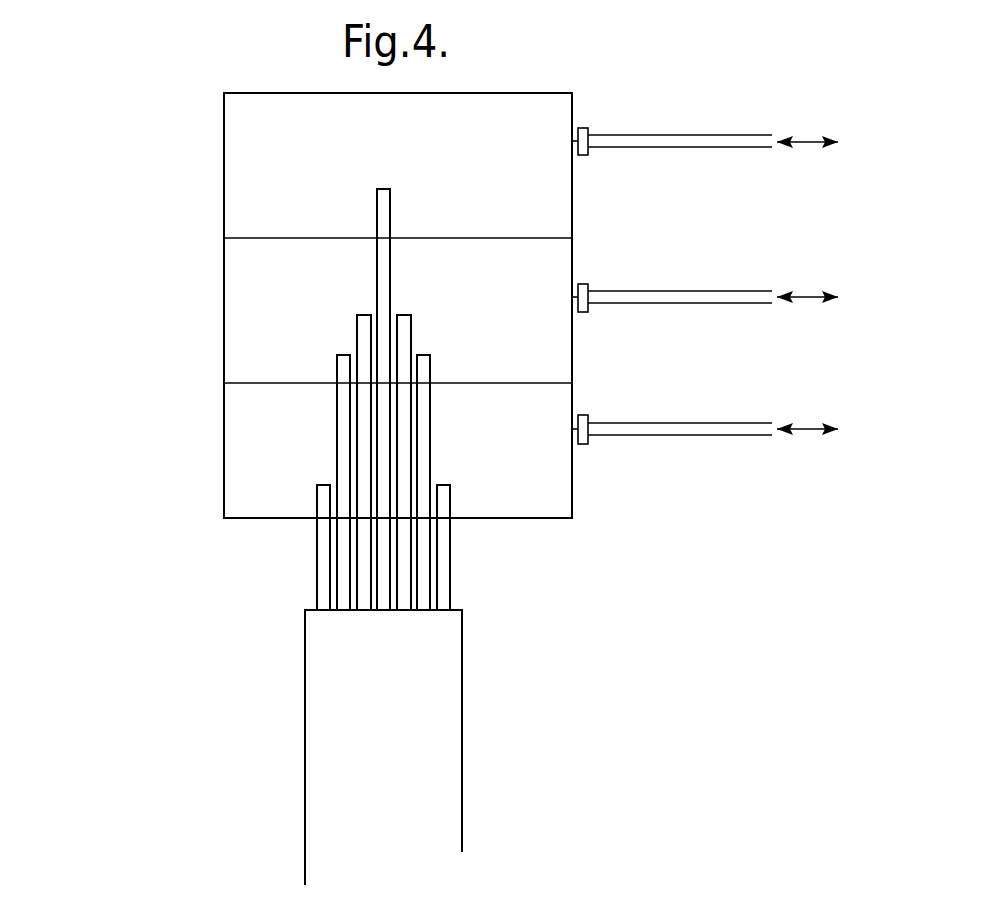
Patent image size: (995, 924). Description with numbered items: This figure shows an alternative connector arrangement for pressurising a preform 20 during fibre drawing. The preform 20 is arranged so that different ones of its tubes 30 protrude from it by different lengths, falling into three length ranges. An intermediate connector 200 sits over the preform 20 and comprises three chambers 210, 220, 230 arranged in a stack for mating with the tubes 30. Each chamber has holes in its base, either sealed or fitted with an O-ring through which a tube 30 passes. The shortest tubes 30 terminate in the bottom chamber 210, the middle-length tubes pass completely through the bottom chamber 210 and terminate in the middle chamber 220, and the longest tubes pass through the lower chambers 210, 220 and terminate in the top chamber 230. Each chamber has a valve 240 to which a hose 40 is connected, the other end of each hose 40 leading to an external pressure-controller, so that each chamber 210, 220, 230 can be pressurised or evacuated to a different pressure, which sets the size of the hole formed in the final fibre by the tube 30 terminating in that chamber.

The preform 20 is at (437, 737).
The tubes 30 is at (450, 567).
The hoses 40 is at (690, 290).
The intermediate connector 200 is at (127, 413).
The bottom chamber 210 is at (263, 465).
The middle chamber 220 is at (247, 310).
The top chamber 230 is at (255, 171).
The valve 240 is at (588, 127).